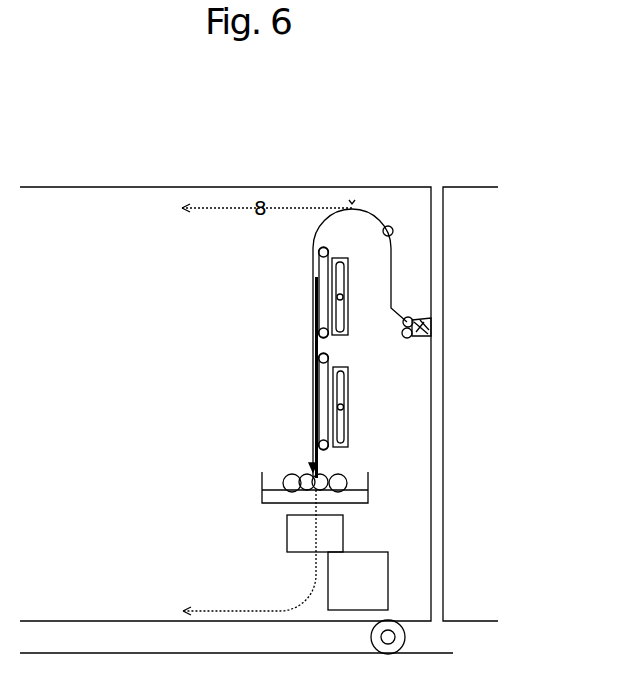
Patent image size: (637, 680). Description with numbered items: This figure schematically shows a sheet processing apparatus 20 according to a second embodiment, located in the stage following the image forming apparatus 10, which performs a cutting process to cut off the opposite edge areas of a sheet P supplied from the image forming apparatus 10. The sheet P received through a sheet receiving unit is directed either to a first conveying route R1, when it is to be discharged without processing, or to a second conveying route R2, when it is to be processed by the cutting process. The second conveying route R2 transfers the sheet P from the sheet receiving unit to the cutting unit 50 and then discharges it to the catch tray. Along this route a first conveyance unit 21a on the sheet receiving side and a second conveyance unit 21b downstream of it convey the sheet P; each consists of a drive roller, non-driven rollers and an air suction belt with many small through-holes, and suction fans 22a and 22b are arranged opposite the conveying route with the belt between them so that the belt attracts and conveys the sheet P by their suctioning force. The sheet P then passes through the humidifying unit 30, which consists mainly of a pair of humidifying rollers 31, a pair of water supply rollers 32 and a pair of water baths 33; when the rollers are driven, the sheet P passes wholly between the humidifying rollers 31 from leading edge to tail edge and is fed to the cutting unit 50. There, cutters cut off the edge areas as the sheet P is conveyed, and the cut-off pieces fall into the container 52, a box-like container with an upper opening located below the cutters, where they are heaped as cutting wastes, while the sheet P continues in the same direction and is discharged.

The image forming apparatus 10 is at (491, 185).
The sheet processing apparatus 20 is at (259, 185).
The first conveyance unit 21a is at (328, 250).
The second conveyance unit 21b is at (330, 361).
The suction fan 22a is at (344, 296).
The suction fan 22b is at (348, 408).
The humidifying unit 30 is at (373, 475).
The humidifying rollers 31 is at (312, 478).
The water supply rollers 32 is at (288, 464).
The water baths 33 is at (262, 477).
The cutting unit 50 is at (272, 542).
The container 52 is at (390, 578).
The sheet P is at (309, 303).
The first conveying route R1 is at (228, 208).
The second conveying route R2 is at (312, 240).